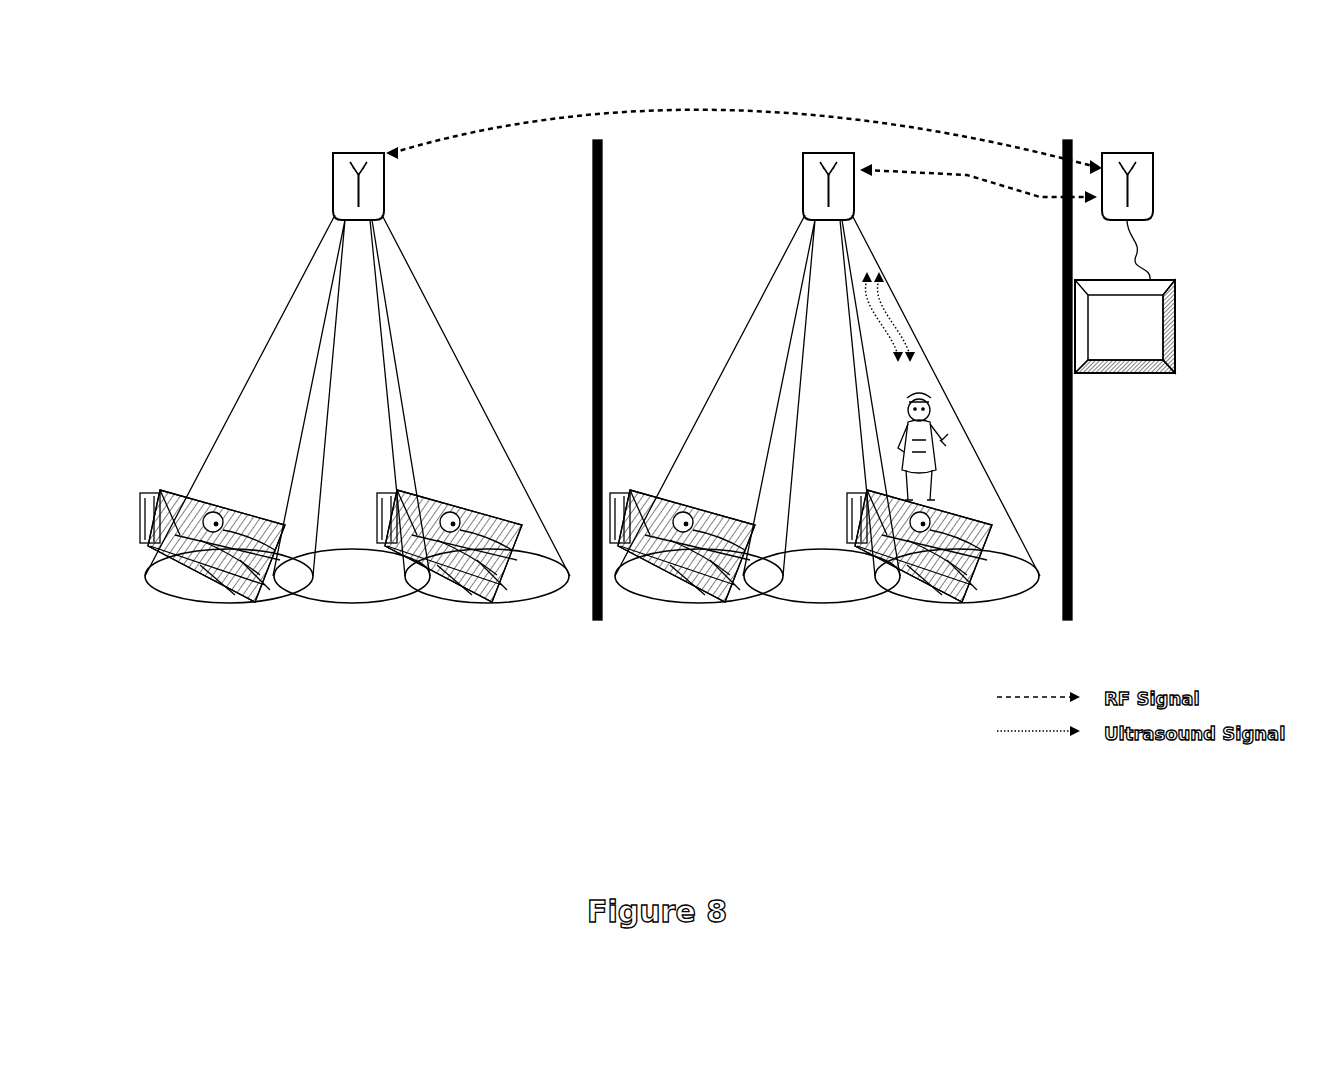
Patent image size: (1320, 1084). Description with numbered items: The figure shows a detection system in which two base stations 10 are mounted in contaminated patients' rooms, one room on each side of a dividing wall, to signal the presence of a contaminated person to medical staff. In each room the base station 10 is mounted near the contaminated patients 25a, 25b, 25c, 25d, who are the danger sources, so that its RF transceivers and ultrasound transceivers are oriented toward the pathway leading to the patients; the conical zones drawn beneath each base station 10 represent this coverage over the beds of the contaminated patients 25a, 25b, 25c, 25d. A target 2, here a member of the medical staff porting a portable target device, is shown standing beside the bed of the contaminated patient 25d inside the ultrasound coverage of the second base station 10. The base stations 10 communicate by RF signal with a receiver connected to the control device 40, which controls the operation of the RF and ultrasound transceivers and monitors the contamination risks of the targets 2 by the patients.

The base station 10 is at (348, 195).
The target 2 is at (930, 387).
The contaminated patient 25a is at (200, 582).
The contaminated patient 25b is at (453, 582).
The contaminated patient 25c is at (683, 583).
The contaminated patient 25d is at (915, 583).
The control device 40 is at (1140, 340).